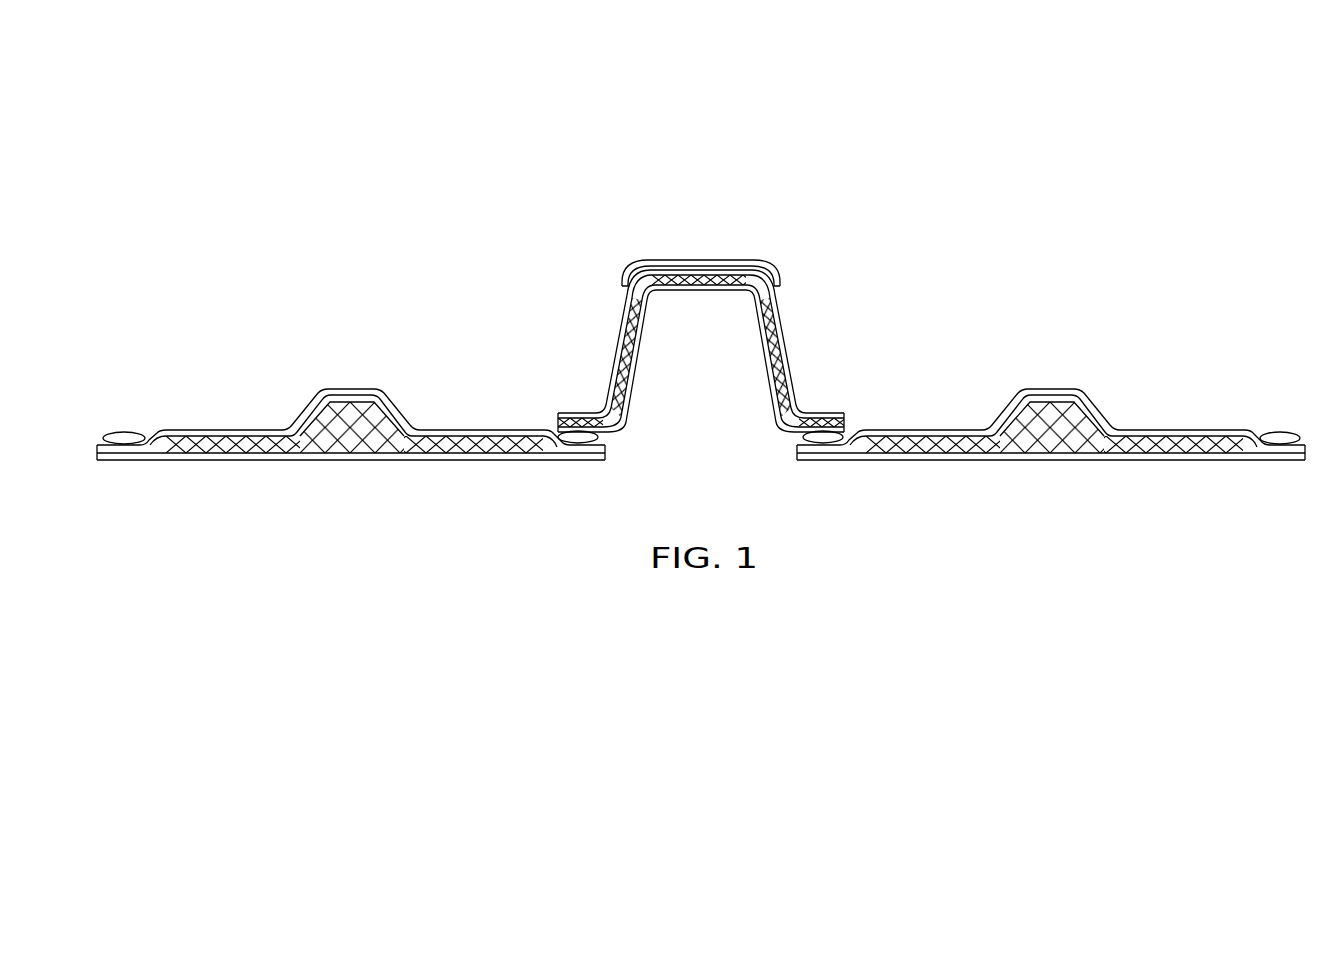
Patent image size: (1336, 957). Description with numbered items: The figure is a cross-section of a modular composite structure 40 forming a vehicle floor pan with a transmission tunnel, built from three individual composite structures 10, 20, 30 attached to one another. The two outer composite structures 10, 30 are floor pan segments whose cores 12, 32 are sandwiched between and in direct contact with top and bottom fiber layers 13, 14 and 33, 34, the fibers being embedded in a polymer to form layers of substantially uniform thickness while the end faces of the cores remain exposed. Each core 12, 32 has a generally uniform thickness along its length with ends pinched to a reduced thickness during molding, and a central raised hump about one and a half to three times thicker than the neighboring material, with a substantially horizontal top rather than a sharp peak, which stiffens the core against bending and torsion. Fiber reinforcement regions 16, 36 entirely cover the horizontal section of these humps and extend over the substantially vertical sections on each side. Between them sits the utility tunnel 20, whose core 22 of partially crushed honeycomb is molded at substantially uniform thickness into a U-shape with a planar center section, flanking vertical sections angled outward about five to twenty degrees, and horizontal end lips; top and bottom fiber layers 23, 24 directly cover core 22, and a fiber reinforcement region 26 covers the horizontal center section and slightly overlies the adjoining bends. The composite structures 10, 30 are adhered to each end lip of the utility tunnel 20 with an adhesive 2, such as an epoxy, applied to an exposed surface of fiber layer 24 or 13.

The adhesive 2 is at (125, 433).
The composite structure 10 is at (297, 340).
The core 12 is at (365, 414).
The fiber layer 13 is at (467, 428).
The fiber layer 14 is at (341, 461).
The fiber reinforcement region 16 is at (313, 410).
The utility tunnel 20 is at (648, 192).
The core 22 is at (622, 338).
The top fiber layer 23 is at (783, 338).
The bottom fiber layer 24 is at (635, 372).
The fiber reinforcement region 26 is at (756, 258).
The composite structure 30 is at (999, 340).
The core 32 is at (1063, 414).
The fiber layer 33 is at (1167, 428).
The fiber layer 34 is at (1055, 461).
The fiber reinforcement region 36 is at (1012, 410).
The modular composite structure 40 is at (1085, 148).